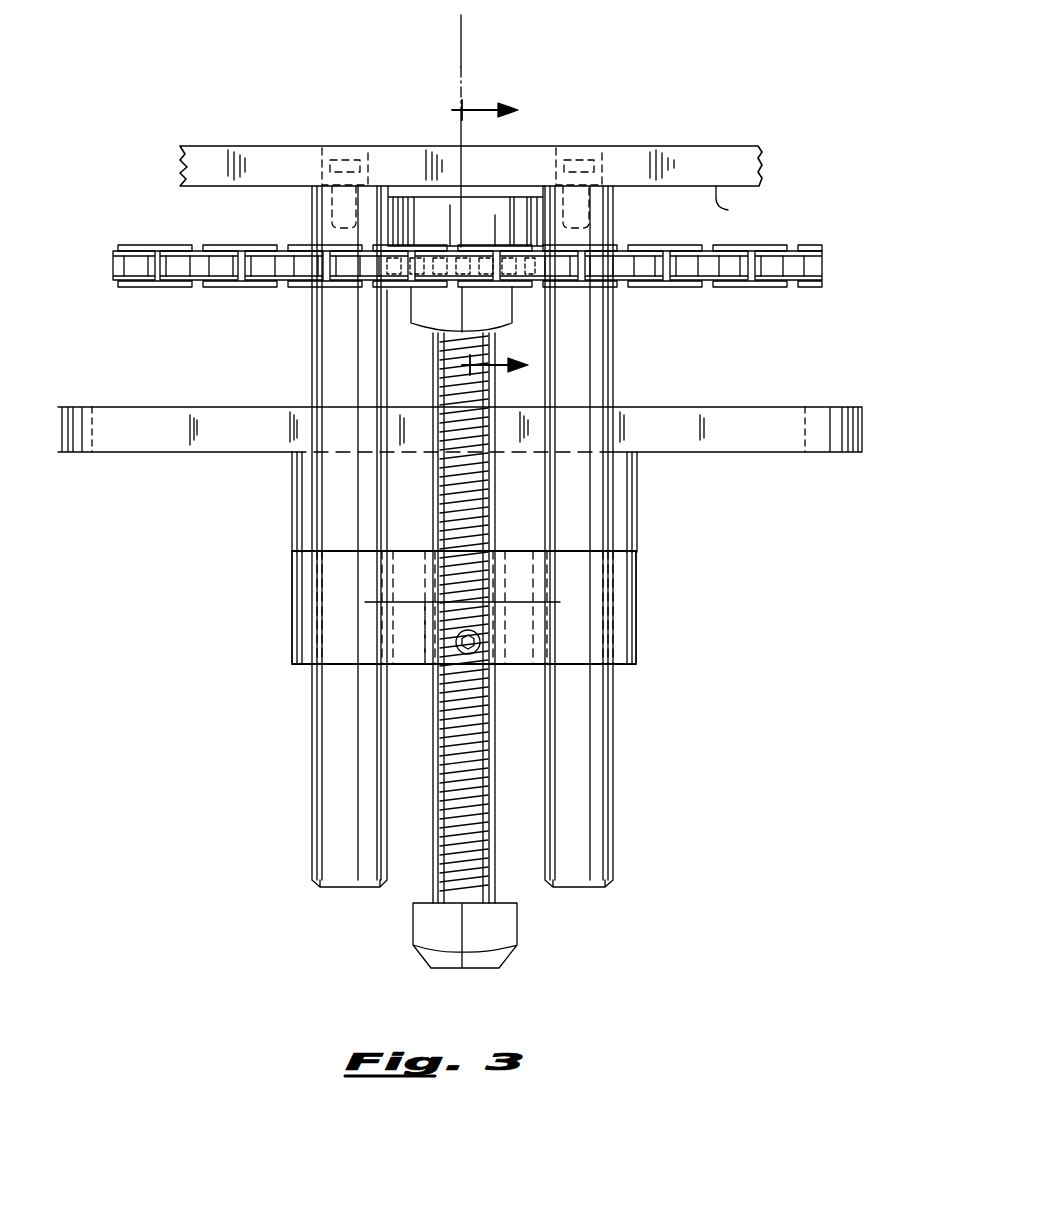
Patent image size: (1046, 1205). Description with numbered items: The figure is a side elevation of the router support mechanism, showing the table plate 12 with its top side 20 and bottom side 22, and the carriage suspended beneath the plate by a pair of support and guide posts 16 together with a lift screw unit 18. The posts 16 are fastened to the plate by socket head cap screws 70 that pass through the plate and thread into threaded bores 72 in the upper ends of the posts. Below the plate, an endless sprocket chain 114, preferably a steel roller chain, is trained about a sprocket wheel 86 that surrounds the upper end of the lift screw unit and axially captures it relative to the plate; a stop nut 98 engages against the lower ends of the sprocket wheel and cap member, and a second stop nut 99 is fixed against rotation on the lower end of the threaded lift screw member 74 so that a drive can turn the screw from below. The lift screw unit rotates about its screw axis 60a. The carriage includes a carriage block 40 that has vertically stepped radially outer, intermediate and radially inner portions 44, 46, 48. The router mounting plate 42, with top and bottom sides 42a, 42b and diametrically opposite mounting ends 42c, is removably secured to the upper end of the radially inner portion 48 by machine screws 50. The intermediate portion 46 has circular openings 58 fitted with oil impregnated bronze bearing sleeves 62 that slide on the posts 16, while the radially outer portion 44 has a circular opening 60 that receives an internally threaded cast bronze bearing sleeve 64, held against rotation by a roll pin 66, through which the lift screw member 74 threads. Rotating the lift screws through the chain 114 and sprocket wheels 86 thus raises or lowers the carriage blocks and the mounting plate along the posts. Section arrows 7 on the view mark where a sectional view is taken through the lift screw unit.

The section line 7- 7 is at (498, 237).
The table plate 12 is at (680, 108).
The support and guide posts 16 is at (312, 830).
The lift screw unit 18 is at (468, 628).
The top side 20 is at (722, 147).
The bottom side 22 is at (736, 207).
The carriage block 40 is at (483, 589).
The router mounting plate 42 is at (190, 468).
The top side 42a is at (100, 387).
The bottom side 42b is at (790, 452).
The mounting ends 42c is at (620, 428).
The radially outer portion 44 is at (520, 655).
The intermediate portion 46 is at (640, 556).
The radially inner portion 48 is at (640, 498).
The machine screws 50 is at (302, 583).
The circular openings 58 is at (640, 628).
The circular openings 60 is at (425, 628).
The screw axis 60a is at (463, 38).
The oil impregnated bronze bearing sleeves 62 is at (302, 614).
The cast bronze bearing sleeve 64 is at (430, 655).
The roll pin 66 is at (478, 650).
The socket head cap screws 70 is at (351, 142).
The threaded bores 72 is at (324, 146).
The threaded lift screw member 74 is at (495, 790).
The sprocket wheel 86 is at (532, 215).
The stop nut 98 is at (428, 308).
The stop nut 99 is at (517, 945).
The endless sprocket chain 114 is at (268, 290).